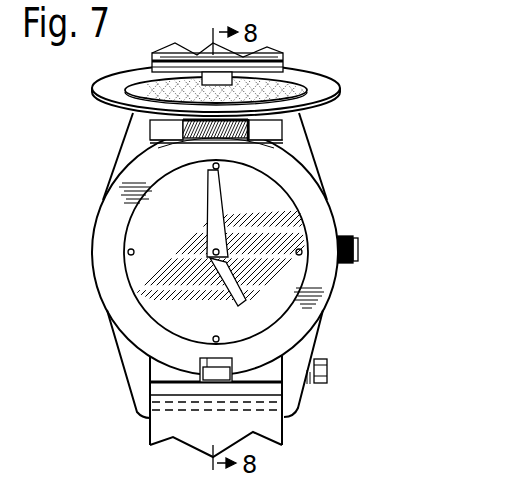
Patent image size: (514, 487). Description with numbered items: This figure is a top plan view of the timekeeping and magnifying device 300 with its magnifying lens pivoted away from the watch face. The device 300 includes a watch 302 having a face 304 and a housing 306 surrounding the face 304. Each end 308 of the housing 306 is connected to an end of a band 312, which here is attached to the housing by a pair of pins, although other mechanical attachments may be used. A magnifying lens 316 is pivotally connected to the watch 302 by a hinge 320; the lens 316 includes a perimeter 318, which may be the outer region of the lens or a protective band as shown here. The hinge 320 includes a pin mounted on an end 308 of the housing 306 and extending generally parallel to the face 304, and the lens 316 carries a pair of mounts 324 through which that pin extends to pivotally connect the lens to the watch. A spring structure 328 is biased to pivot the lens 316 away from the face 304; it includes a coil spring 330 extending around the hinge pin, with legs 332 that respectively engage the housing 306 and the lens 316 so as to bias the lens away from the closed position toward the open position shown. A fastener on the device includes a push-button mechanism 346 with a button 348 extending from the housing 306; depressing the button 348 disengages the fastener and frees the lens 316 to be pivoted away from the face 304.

The timekeeping and magnifying device 300 is at (412, 56).
The watch 302 is at (84, 243).
The face 304 is at (197, 210).
The housing 306 is at (107, 330).
The end 308 is at (112, 170).
The band 312 is at (283, 437).
The magnifying lens 316 is at (368, 68).
The perimeter 318 is at (293, 63).
The hinge 320 is at (292, 129).
The mounts 324 is at (149, 126).
The spring structure 328 is at (250, 170).
The coil spring 330 is at (284, 142).
The legs 332 is at (184, 144).
The push-button mechanism 346 is at (335, 386).
The button 348 is at (328, 362).